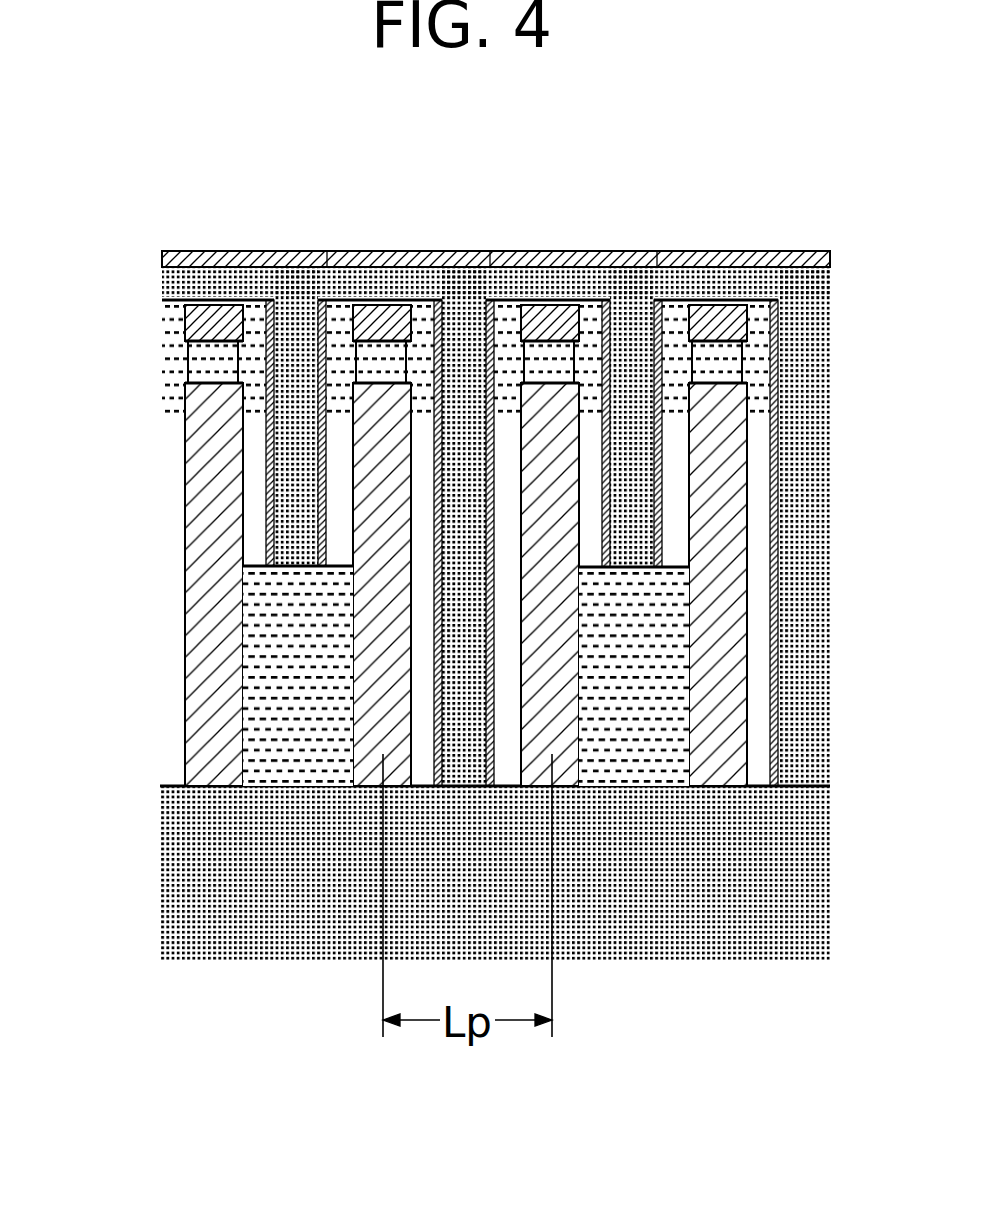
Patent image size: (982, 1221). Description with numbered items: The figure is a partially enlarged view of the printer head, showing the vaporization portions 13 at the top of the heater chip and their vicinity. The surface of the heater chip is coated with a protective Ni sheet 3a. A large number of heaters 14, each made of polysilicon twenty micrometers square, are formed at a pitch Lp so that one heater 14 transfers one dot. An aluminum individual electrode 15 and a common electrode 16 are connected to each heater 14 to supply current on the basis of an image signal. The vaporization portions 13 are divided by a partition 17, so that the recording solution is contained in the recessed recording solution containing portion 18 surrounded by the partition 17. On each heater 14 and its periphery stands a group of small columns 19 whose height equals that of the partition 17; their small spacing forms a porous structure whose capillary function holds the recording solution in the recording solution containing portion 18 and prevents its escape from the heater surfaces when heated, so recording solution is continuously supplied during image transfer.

The protective Ni sheet 3a is at (262, 648).
The vaporization portion 13 is at (155, 335).
The heater 14 is at (381, 352).
The individual electrode 15 is at (203, 706).
The common electrode 16 is at (187, 327).
The partition 17 is at (647, 251).
The recording solution containing portion 18 is at (503, 530).
The small column 19 is at (163, 403).